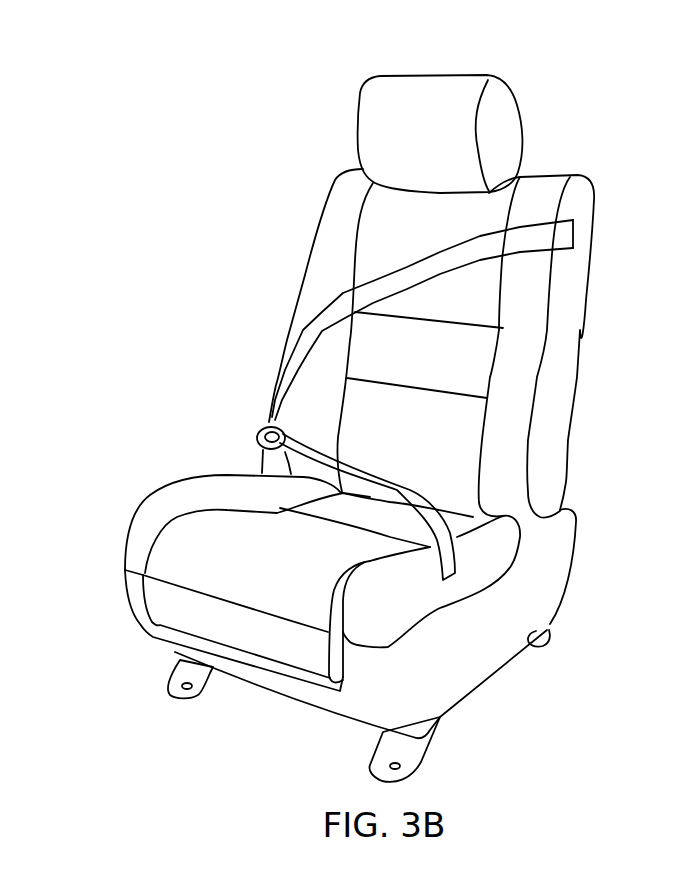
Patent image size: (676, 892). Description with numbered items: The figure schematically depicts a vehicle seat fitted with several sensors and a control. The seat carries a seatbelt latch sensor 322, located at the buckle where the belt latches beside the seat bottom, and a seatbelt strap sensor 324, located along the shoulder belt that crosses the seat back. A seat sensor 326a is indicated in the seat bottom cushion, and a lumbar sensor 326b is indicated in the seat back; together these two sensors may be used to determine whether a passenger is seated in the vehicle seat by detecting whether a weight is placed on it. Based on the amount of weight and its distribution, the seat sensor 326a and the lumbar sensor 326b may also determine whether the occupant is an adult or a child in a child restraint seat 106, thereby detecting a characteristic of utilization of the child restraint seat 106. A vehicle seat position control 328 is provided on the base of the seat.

The child restraint seat 106 is at (588, 122).
The seatbelt latch sensor 322 is at (257, 450).
The seatbelt strap sensor 324 is at (572, 232).
The seat sensor 326a is at (372, 531).
The lumbar sensor 326b is at (487, 360).
The vehicle seat position control 328 is at (525, 603).